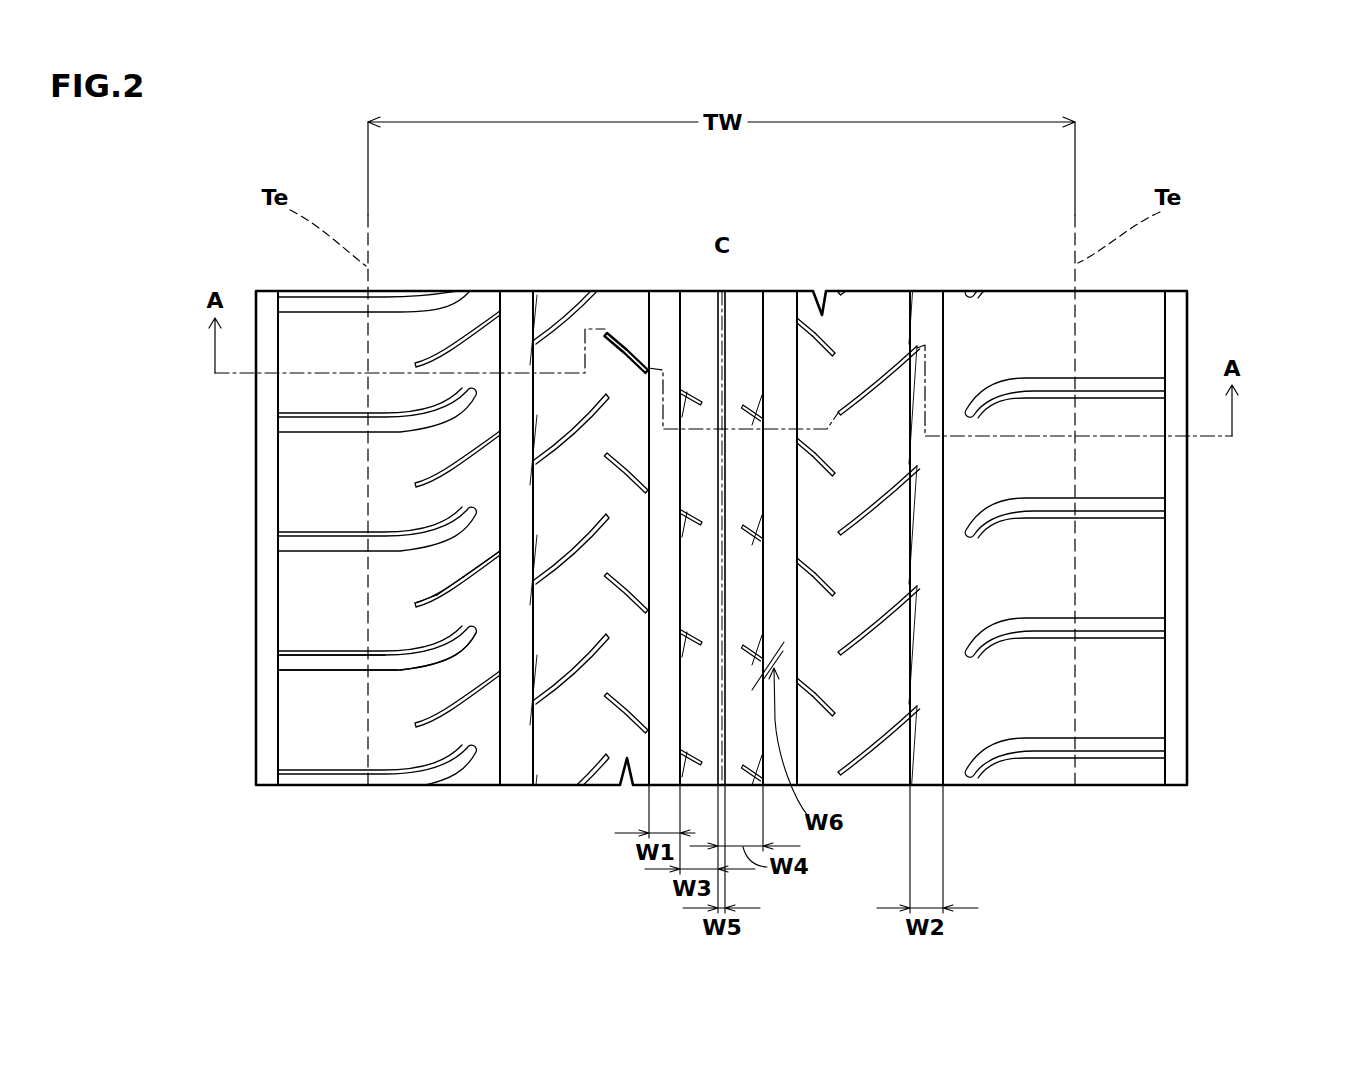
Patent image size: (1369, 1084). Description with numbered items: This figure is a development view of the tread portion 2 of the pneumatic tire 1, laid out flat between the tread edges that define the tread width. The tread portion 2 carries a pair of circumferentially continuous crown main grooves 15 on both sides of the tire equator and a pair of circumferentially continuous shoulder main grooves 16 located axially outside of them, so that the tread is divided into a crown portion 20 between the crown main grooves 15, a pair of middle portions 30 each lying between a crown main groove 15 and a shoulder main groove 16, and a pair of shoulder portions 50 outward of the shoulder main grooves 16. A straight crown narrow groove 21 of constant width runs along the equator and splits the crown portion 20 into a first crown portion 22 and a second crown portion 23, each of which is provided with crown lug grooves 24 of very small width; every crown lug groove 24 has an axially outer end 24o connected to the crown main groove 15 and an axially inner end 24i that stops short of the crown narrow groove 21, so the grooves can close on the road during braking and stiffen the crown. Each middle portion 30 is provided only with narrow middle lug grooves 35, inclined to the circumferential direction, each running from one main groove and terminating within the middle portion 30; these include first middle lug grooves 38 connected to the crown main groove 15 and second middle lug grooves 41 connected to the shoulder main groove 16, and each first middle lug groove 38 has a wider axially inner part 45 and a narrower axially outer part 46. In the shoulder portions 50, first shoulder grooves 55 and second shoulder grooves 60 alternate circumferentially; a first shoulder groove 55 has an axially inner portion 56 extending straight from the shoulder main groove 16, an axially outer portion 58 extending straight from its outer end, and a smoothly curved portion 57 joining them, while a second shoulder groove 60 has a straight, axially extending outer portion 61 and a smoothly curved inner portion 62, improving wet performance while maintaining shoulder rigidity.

The pneumatic tire 1 is at (768, 485).
The tread portion 2 is at (1148, 273).
The crown main groove 15 is at (663, 299).
The shoulder main groove 16 is at (518, 305).
The crown portion 20 is at (740, 460).
The crown narrow groove 21 is at (729, 302).
The first crown portion 22 is at (702, 304).
The second crown portion 23 is at (781, 484).
The crown lug groove 24 is at (999, 587).
The axially inner end of crown lug groove 24i is at (1265, 553).
The axially outer end of crown lug groove 24o is at (745, 545).
The middle portion 30 is at (946, 539).
The middle lug groove 35 is at (948, 545).
The first middle lug groove 38 is at (926, 591).
The second middle lug groove 41 is at (870, 617).
The axially inner part of first middle lug groove 45 is at (797, 680).
The second portion of bent sipe 46 is at (830, 703).
The shoulder portion 50 is at (627, 539).
The first shoulder groove 55 is at (295, 588).
The axially inner portion of first shoulder groove 56 is at (497, 546).
The smoothly curved portion of first shoulder groove 57 is at (458, 578).
The axially outer portion of first shoulder groove 58 is at (445, 590).
The second shoulder groove 60 is at (627, 523).
The axially outer portion of second shoulder groove 61 is at (388, 666).
The axially inner portion of second shoulder groove 62 is at (467, 637).